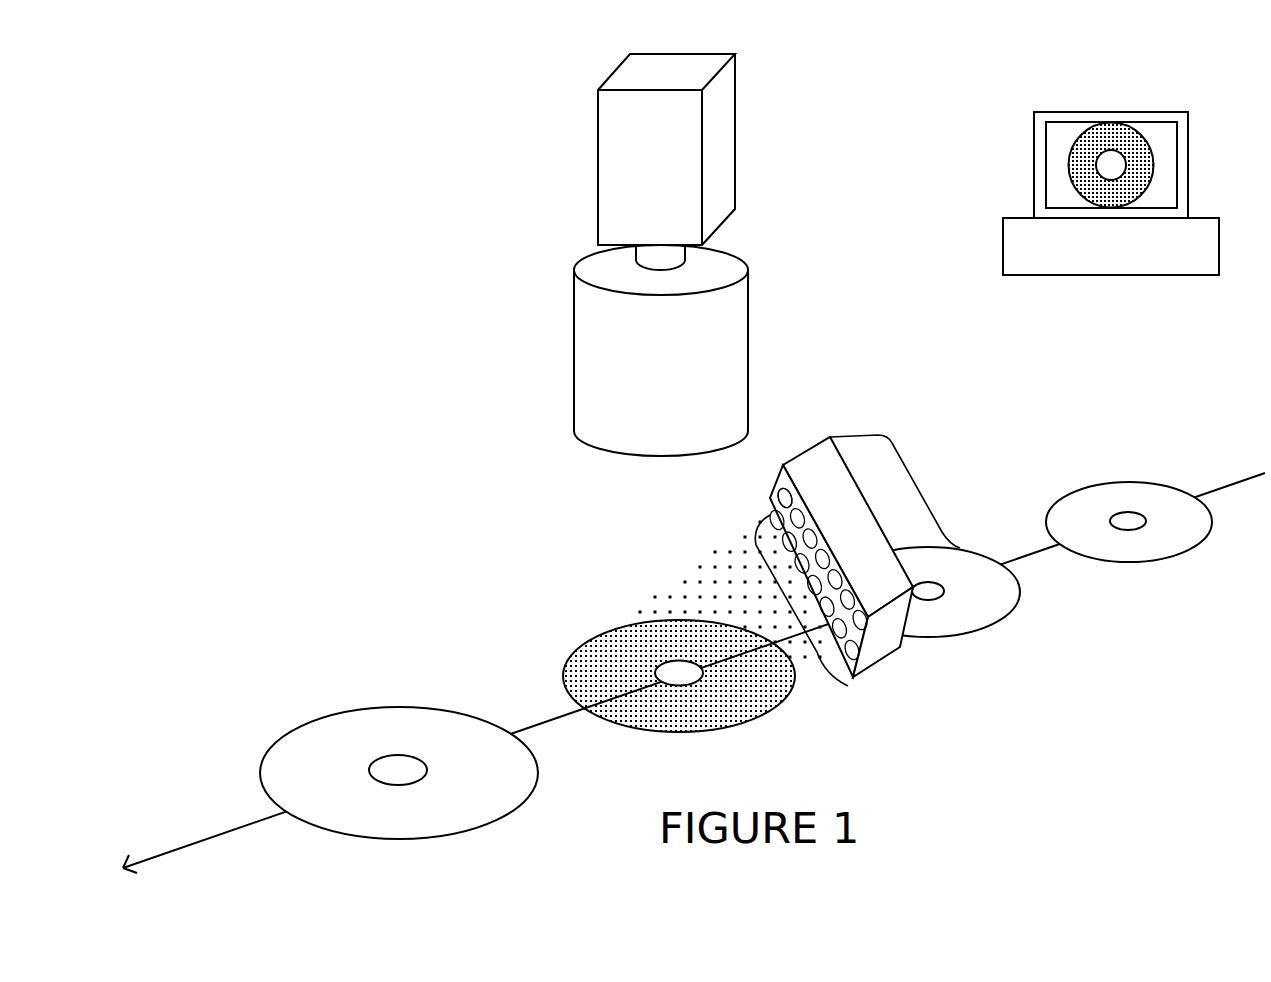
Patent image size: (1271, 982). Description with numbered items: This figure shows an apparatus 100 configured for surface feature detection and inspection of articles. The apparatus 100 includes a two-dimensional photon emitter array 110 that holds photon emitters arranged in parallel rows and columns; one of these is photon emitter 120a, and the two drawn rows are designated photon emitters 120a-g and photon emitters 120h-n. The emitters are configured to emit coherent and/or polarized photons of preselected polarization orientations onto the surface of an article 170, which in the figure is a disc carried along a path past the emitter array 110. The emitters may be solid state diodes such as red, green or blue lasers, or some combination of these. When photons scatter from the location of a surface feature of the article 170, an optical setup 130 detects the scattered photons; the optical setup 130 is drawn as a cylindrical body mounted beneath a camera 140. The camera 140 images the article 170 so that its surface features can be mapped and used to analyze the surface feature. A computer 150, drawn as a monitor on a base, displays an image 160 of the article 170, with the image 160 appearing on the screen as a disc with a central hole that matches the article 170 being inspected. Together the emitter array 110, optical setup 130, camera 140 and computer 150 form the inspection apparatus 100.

The apparatus 100 is at (193, 229).
The two-dimensional photon emitter array 110 is at (817, 453).
The photon emitter 120a is at (784, 490).
The photon emitters 120a-g is at (907, 533).
The photon emitters 120h-n is at (815, 664).
The optical setup 130 is at (608, 347).
The camera 140 is at (633, 187).
The computer 150 is at (1035, 232).
The image 160 is at (1128, 180).
The article 170 is at (612, 645).